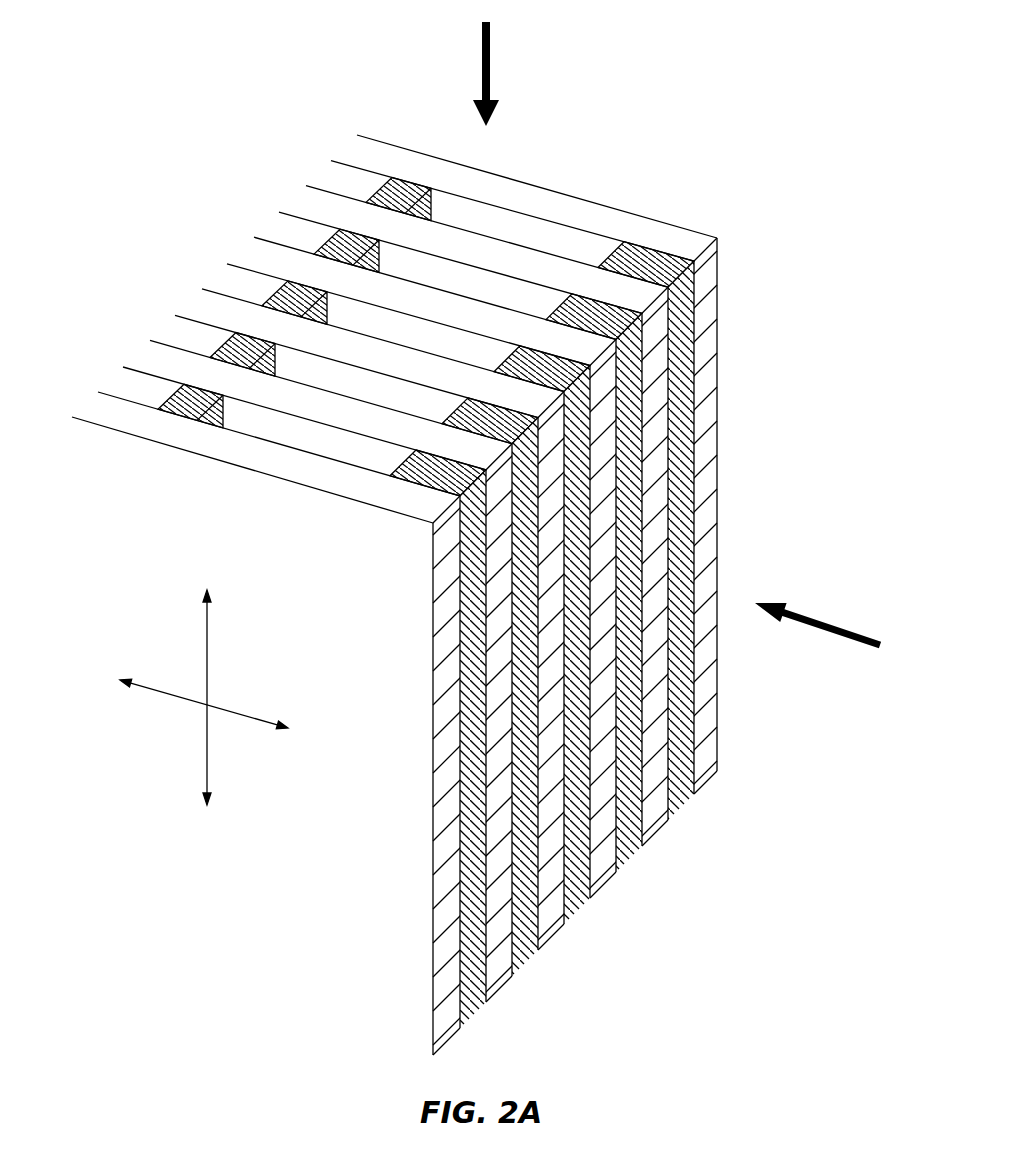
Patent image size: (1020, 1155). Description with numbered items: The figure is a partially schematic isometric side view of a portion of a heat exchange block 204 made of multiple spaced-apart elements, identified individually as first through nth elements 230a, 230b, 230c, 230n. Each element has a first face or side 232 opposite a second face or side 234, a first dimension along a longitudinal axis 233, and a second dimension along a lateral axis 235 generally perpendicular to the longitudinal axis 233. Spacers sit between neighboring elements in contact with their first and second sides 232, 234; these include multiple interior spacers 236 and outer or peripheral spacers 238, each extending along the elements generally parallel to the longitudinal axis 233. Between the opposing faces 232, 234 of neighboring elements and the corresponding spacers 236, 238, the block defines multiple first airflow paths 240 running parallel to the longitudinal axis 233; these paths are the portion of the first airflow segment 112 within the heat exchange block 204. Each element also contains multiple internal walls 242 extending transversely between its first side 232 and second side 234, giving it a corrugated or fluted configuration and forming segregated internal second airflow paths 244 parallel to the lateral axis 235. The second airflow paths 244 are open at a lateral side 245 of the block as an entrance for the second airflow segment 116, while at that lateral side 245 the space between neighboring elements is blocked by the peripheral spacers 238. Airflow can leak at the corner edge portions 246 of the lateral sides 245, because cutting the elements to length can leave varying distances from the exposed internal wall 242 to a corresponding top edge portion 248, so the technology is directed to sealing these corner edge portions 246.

The first airflow segment 112 is at (491, 68).
The second airflow segment 116 is at (806, 620).
The heat exchange block 204 is at (117, 178).
The first element 230a is at (98, 404).
The second element 230b is at (147, 352).
The third element 230c is at (197, 300).
The nth element 230n is at (366, 138).
The first face or side 232 is at (215, 480).
The longitudinal axis 233 is at (209, 641).
The second face or side 234 is at (262, 430).
The lateral axis 235 is at (215, 693).
The interior spacer 236 is at (402, 180).
The peripheral spacer 238 is at (680, 343).
The first airflow path 240 is at (415, 262).
The internal wall 242 is at (602, 773).
The second airflow path 244 is at (545, 578).
The lateral side 245 is at (808, 488).
The corner edge portion 246 is at (714, 222).
The top edge portion 248 is at (290, 487).